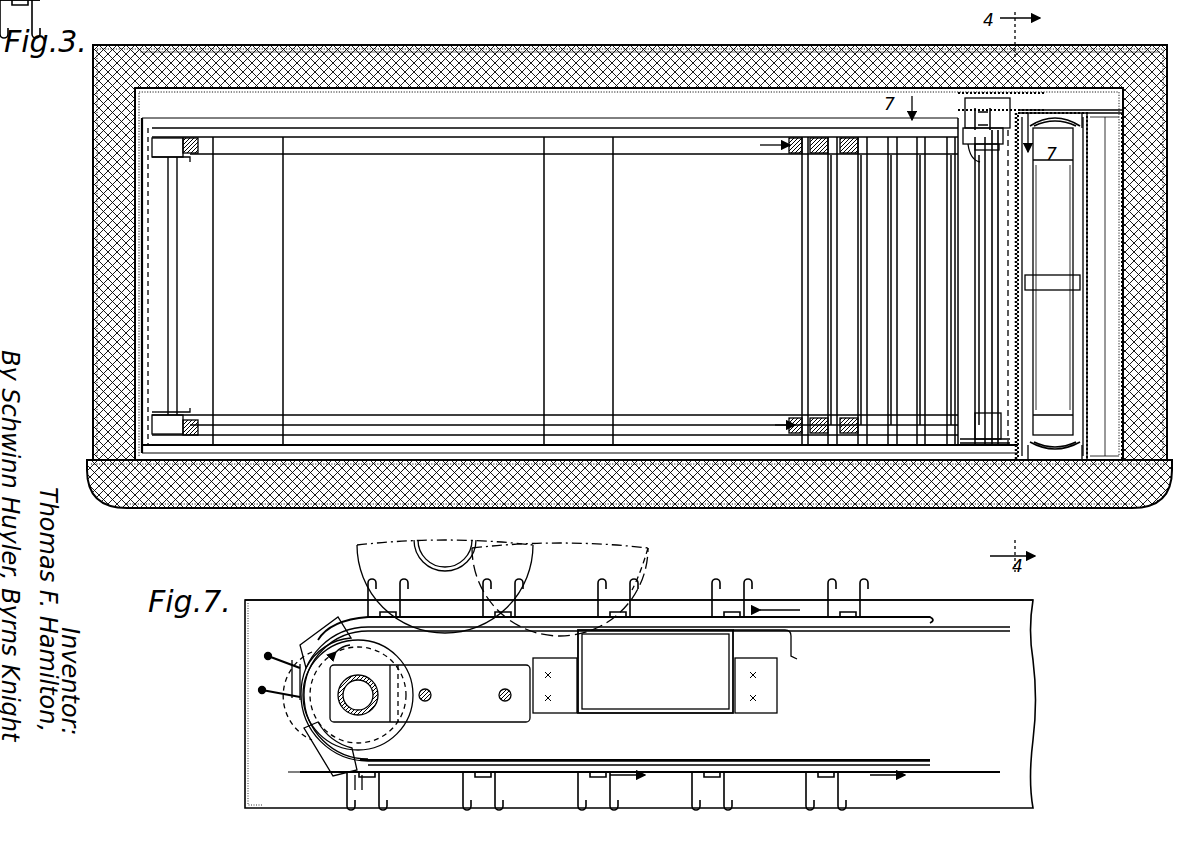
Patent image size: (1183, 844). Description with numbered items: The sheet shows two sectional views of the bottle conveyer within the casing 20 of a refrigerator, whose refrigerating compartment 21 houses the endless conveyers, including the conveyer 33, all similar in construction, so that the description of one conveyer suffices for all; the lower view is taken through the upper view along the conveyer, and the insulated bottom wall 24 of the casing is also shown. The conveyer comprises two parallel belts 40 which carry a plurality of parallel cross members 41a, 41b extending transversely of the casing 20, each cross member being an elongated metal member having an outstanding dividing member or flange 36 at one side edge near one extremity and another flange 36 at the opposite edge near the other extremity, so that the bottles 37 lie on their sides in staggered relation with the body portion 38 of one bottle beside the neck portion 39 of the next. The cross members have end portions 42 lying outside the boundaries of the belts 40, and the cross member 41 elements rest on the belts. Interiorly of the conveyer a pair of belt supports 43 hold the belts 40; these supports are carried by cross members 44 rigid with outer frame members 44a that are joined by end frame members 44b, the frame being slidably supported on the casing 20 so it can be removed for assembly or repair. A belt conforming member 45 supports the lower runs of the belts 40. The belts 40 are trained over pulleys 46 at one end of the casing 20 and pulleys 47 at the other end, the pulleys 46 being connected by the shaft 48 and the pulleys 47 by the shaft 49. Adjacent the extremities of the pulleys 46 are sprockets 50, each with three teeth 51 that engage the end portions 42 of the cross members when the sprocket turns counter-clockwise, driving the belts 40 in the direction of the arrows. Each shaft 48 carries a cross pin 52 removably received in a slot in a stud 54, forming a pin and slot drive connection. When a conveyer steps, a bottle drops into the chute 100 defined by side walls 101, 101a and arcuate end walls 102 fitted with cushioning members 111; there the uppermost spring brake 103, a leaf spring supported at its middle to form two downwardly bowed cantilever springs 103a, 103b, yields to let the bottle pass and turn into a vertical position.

In FIG. 3, the casing 20 is at (630, 288).
In FIG. 3, the refrigerating compartment 21 is at (460, 108).
In FIG. 3, the bottom insulation wall 24 is at (290, 480).
In FIG. 7, the endless conveyer 33 is at (660, 614).
In FIG. 3, the dividing member or flange 36 is at (808, 236).
In FIG. 7, the dividing member or flange 36 is at (716, 590).
In FIG. 7, the bottle 37 is at (357, 545).
In FIG. 7, the body portion 38 is at (634, 580).
In FIG. 7, the neck portion 39 is at (446, 567).
In FIG. 3, the belt 40 is at (795, 142).
In FIG. 7, the belt 40 is at (902, 620).
In FIG. 7, the slat 41 is at (362, 778).
In FIG. 3, the cross member 41a is at (805, 334).
In FIG. 7, the cross member 41a is at (405, 618).
In FIG. 3, the cross member 41b is at (832, 356).
In FIG. 7, the cross member 41b is at (505, 618).
In FIG. 3, the end portion 42 is at (806, 136).
In FIG. 3, the belt support 43 is at (687, 155).
In FIG. 7, the belt support 43 is at (855, 634).
In FIG. 3, the cross member 44 is at (280, 327).
In FIG. 7, the cross member 44 is at (777, 653).
In FIG. 3, the outer frame member 44a is at (411, 125).
In FIG. 3, the end frame member 44b is at (150, 244).
In FIG. 7, the belt conforming or supporting member 45 is at (322, 776).
In FIG. 3, the pulley 46 is at (975, 164).
In FIG. 7, the pulley 46 is at (306, 765).
In FIG. 3, the pulley 47 is at (186, 158).
In FIG. 3, the shaft 48 is at (990, 216).
In FIG. 3, the shaft 49 is at (176, 315).
In FIG. 3, the sprocket 50 is at (1000, 128).
In FIG. 7, the sprocket 50 is at (395, 731).
In FIG. 7, the tooth 51 is at (318, 634).
In FIG. 3, the cross pin 52 is at (968, 124).
In FIG. 7, the cross pin 52 is at (430, 693).
In FIG. 7, the stud 54 is at (340, 700).
In FIG. 3, the chute 100 is at (1080, 333).
In FIG. 3, the side wall 101 is at (1090, 223).
In FIG. 3, the side wall 101a is at (1022, 268).
In FIG. 3, the end wall 102 is at (1075, 112).
In FIG. 3, the spring brake 103 is at (1067, 183).
In FIG. 3, the cantilever spring 103a is at (1057, 287).
In FIG. 3, the cantilever spring 103b is at (1057, 287).
In FIG. 3, the cushioning member 111 is at (1076, 122).